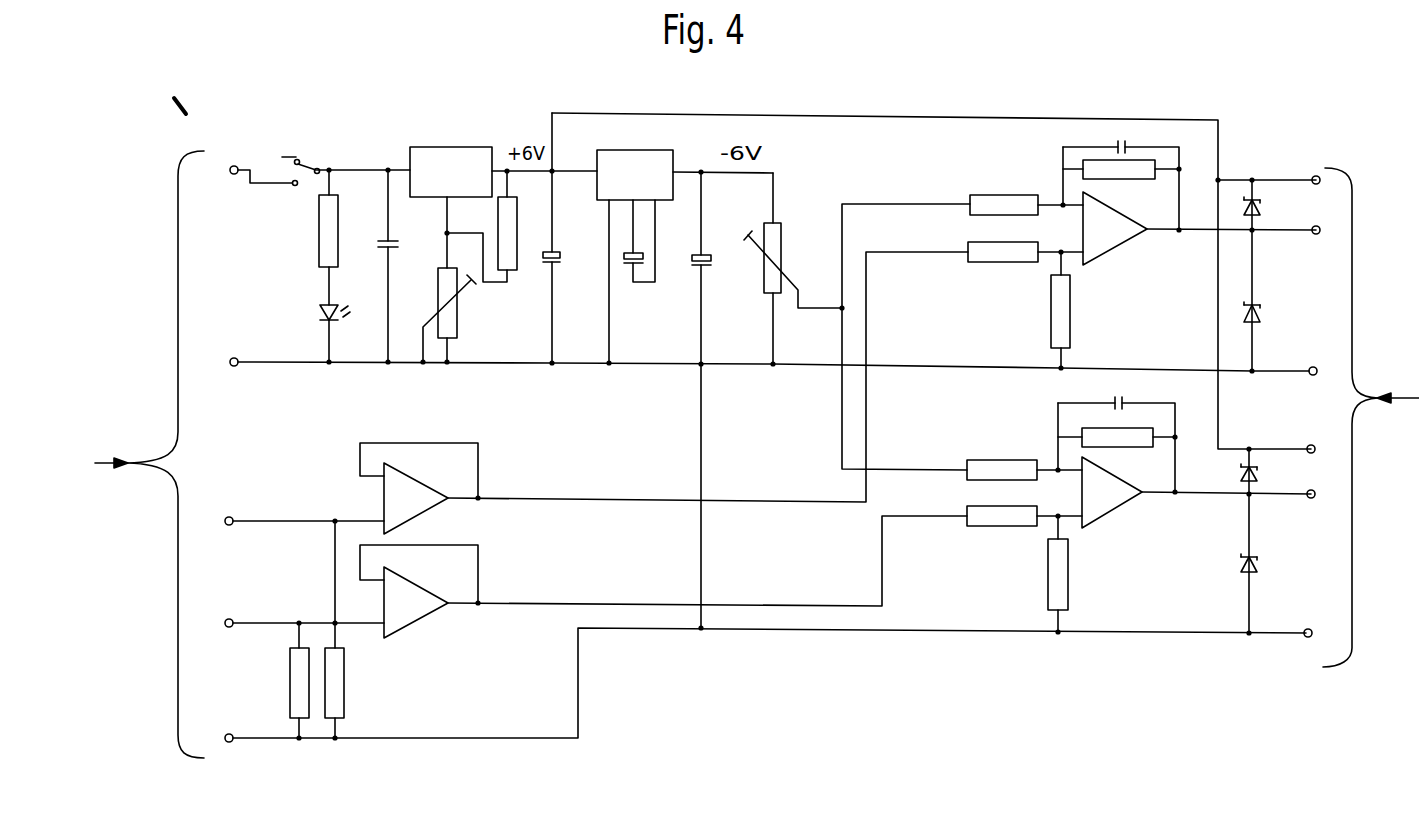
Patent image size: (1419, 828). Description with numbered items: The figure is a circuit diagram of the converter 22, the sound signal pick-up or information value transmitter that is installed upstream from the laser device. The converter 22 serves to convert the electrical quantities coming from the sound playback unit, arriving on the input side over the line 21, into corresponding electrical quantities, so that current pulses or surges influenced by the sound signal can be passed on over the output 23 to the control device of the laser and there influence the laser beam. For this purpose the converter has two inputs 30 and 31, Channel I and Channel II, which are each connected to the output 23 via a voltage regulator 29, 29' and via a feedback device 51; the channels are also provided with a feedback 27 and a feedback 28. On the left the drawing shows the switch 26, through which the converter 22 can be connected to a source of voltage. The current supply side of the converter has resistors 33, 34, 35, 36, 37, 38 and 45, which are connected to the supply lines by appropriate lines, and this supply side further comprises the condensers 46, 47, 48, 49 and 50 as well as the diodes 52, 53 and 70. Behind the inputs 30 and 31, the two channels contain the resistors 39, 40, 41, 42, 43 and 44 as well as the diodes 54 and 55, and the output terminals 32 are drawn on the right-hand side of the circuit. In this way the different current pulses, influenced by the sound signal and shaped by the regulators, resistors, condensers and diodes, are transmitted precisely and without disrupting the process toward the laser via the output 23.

The line 21 is at (107, 456).
The converter 22 is at (810, 650).
The output 23 is at (1407, 400).
The switch 26 is at (240, 145).
The feedback 27 is at (1014, 184).
The feedback 28 is at (1018, 553).
The voltage regulator 29 is at (423, 620).
The voltage regulator 29' is at (428, 458).
The input, channel I 30 is at (225, 521).
The input, channel II 31 is at (225, 623).
The output terminals 32 is at (1328, 162).
The resistor 33 is at (318, 242).
The resistor 34 is at (518, 240).
The resistor 35 is at (782, 240).
The resistor 36 is at (990, 194).
The resistor 37 is at (1003, 263).
The resistor 38 is at (1070, 313).
The resistor 39 is at (290, 683).
The resistor 40 is at (345, 687).
The resistor 41 is at (985, 458).
The resistor 42 is at (985, 528).
The resistor 43 is at (1072, 572).
The resistor 44 is at (1120, 450).
The resistor 45 is at (1130, 180).
The condenser 46 is at (393, 241).
The condenser 47 is at (557, 251).
The condenser 48 is at (627, 266).
The condenser 49 is at (708, 266).
The condenser 50 is at (1126, 120).
The feedback 51 is at (1118, 380).
The diode 52 is at (1262, 205).
The diode 53 is at (1260, 312).
The diode 54 is at (1259, 472).
The diode 55 is at (1259, 565).
The diode 70 is at (318, 313).